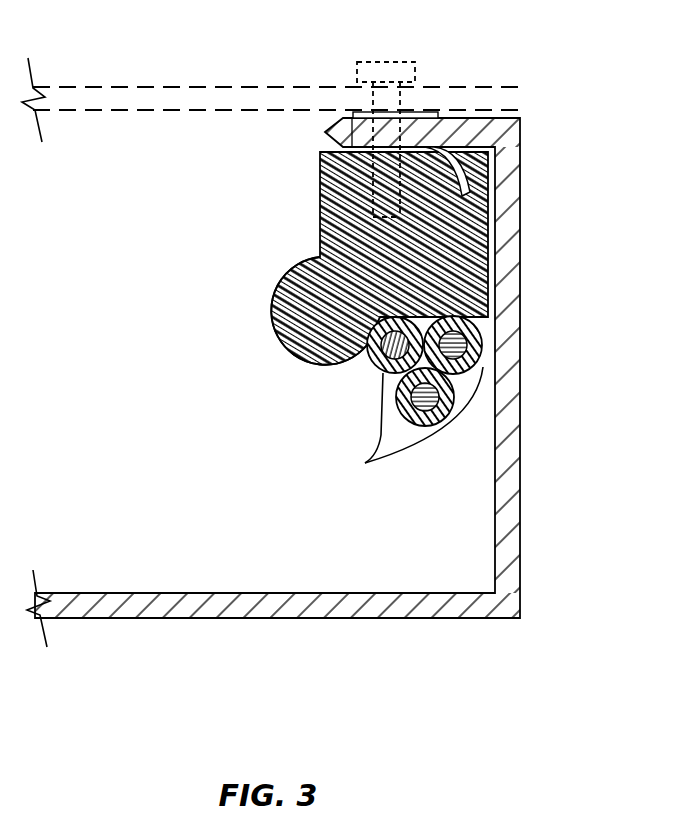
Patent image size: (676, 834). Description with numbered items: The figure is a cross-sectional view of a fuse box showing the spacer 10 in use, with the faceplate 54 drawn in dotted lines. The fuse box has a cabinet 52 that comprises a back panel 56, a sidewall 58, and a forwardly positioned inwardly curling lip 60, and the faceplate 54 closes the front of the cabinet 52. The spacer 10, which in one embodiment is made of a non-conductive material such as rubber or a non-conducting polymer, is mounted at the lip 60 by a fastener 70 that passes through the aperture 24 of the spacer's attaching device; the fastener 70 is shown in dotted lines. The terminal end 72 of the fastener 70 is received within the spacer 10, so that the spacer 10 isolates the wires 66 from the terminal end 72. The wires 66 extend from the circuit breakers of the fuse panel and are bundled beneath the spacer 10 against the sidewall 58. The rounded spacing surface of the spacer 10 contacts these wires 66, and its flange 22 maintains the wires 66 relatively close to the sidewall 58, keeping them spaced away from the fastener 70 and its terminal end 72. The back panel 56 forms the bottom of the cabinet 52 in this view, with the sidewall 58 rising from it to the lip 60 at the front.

The spacer 10 is at (283, 243).
The flange 22 is at (275, 325).
The aperture 24 is at (372, 112).
The cabinet 52 is at (331, 332).
The faceplate 54 is at (132, 95).
The back panel 56 is at (108, 592).
The sidewall 58 is at (523, 428).
The inwardly curling lip 60 is at (473, 110).
The wires 66 is at (368, 463).
The fastener 70 is at (400, 62).
The terminal end 72 is at (385, 215).